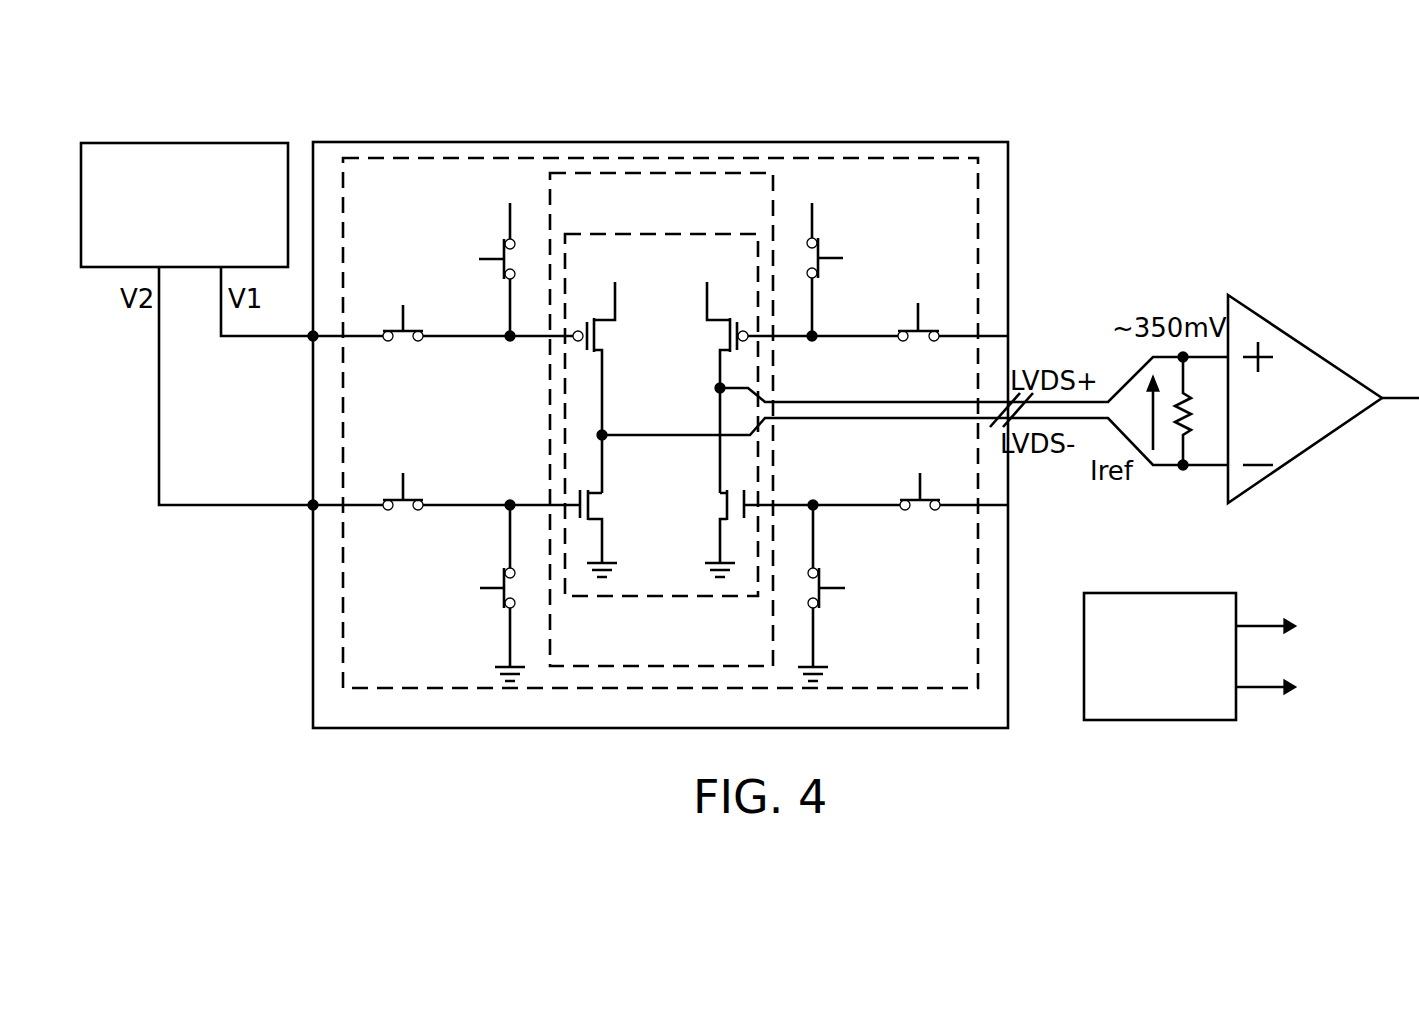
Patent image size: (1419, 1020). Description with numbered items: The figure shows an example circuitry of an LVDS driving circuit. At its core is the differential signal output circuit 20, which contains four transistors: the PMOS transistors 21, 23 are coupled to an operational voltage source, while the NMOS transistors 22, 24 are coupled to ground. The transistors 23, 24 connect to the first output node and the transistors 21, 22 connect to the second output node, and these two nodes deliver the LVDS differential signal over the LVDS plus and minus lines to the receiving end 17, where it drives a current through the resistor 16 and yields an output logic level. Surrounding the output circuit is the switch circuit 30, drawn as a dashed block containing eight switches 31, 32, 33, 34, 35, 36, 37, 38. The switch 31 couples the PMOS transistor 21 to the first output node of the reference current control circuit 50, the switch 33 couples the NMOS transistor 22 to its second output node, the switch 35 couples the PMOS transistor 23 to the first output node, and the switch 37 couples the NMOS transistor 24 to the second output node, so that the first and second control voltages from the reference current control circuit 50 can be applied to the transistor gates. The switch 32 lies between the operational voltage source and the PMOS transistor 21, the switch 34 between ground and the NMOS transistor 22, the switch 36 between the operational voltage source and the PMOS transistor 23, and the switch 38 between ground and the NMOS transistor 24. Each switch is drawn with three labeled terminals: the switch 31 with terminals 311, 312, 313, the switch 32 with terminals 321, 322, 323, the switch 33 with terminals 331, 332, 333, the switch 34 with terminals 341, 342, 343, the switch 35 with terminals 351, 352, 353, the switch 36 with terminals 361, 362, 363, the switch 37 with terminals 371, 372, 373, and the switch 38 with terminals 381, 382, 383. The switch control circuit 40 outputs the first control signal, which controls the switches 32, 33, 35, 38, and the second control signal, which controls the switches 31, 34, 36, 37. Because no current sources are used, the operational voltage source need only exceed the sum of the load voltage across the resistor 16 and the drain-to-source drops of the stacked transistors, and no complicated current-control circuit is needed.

The resistor 16 is at (1188, 435).
The receiving end 17 is at (1305, 453).
The differential signal output circuit 20 is at (635, 234).
The PMOS transistor 21 is at (614, 372).
The NMOS transistor 22 is at (617, 533).
The PMOS transistor 23 is at (712, 372).
The NMOS transistor 24 is at (710, 533).
The switch circuit 30 is at (977, 211).
The switch 31 is at (411, 325).
The switch 31 first terminal 311 is at (374, 322).
The switch 31 second terminal 312 is at (440, 345).
The switch 31 control terminal 313 is at (423, 317).
The switch 32 is at (498, 254).
The switch 32 first terminal 321 is at (529, 227).
The switch 32 second terminal 322 is at (529, 287).
The switch 32 control terminal 323 is at (482, 255).
The switch 33 is at (410, 494).
The switch 33 first terminal 331 is at (374, 493).
The switch 33 second terminal 332 is at (439, 493).
The switch 33 control terminal 333 is at (415, 479).
The switch 34 is at (496, 593).
The switch 34 first terminal 341 is at (529, 616).
The switch 34 second terminal 342 is at (529, 558).
The switch 34 control terminal 343 is at (478, 622).
The switch 35 is at (924, 325).
The switch 35 first terminal 351 is at (956, 326).
The switch 35 second terminal 352 is at (886, 326).
The switch 35 control terminal 353 is at (929, 311).
The switch 36 is at (844, 254).
The switch 36 first terminal 361 is at (830, 228).
The switch 36 second terminal 362 is at (830, 286).
The switch 36 control terminal 363 is at (870, 226).
The switch 37 is at (923, 494).
The switch 37 first terminal 371 is at (956, 494).
The switch 37 second terminal 372 is at (886, 494).
The switch 37 control terminal 373 is at (931, 479).
The switch 38 is at (848, 593).
The switch 38 first terminal 381 is at (832, 615).
The switch 38 second terminal 382 is at (832, 558).
The switch 38 control terminal 383 is at (865, 612).
The switch control circuit 40 is at (1160, 593).
The reference current control circuit 50 is at (188, 143).